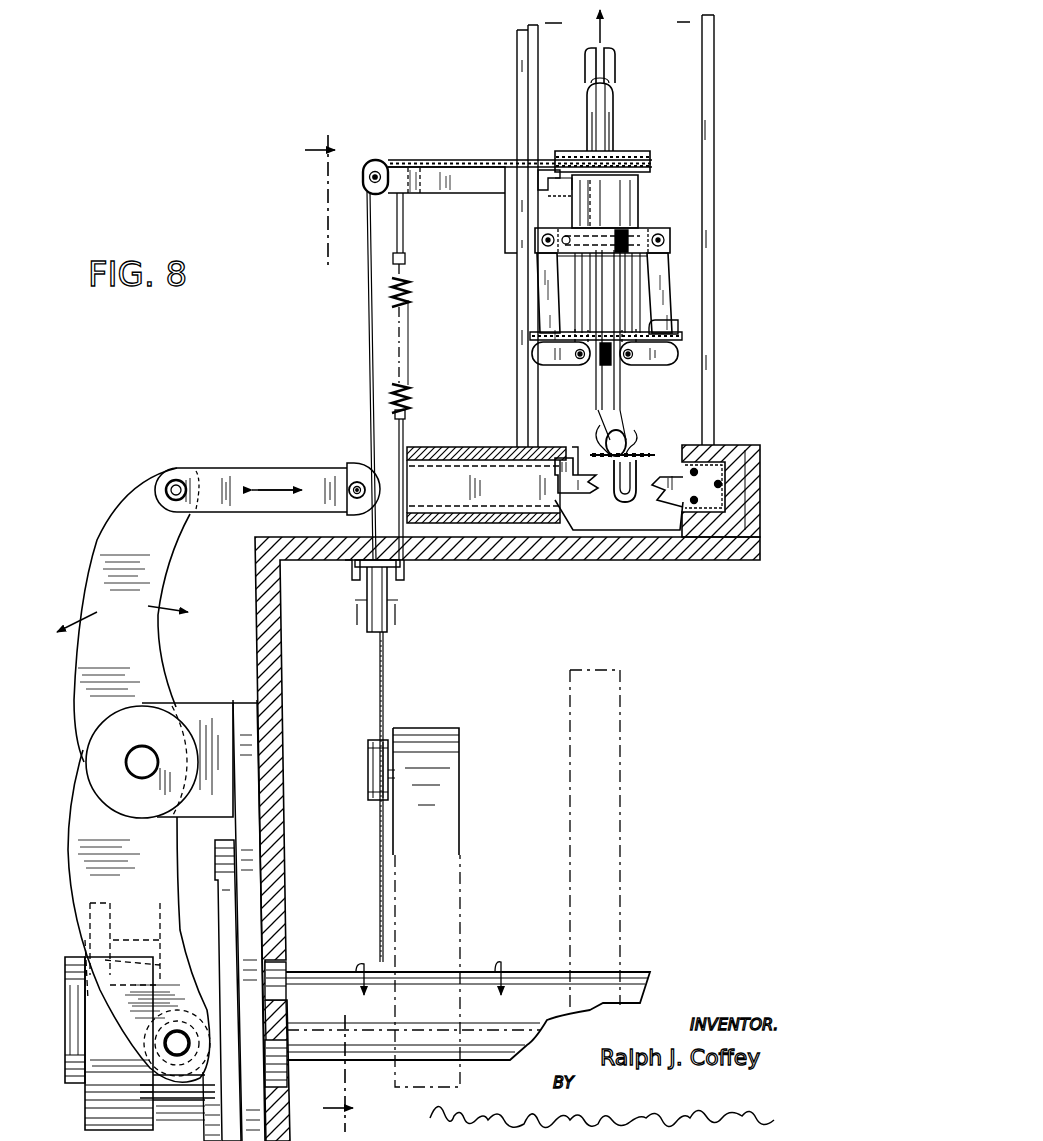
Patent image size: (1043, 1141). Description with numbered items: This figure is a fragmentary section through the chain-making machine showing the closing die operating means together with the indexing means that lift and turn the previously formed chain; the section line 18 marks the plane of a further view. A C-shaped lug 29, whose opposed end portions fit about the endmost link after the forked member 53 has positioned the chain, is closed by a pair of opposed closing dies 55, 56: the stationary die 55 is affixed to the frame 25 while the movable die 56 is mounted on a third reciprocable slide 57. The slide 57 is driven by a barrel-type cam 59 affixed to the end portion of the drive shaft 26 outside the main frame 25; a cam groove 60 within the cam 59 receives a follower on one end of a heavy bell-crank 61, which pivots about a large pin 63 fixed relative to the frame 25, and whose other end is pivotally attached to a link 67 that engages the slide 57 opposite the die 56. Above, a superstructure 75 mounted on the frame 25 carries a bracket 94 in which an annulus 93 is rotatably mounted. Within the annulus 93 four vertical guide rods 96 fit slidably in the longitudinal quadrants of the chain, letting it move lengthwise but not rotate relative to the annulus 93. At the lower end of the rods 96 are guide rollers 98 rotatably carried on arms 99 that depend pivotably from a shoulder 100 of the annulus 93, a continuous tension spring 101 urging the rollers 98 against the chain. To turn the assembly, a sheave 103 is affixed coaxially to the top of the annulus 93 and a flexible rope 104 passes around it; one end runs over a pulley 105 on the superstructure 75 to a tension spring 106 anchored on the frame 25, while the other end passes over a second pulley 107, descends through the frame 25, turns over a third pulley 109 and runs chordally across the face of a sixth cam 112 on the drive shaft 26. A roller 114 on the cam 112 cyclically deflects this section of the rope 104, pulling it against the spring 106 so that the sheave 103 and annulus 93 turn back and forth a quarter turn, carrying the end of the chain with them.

The section line 18- 18 is at (319, 627).
The frame 25 is at (276, 656).
The drive shaft 26 is at (72, 978).
The C-shaped lug 29 is at (617, 434).
The forked member 53 is at (638, 454).
The closing die 55 is at (672, 502).
The closing die 56 is at (580, 466).
The third reciprocable slide 57 is at (478, 462).
The barrel-type cam 59 is at (102, 1092).
The cam groove 60 is at (151, 1104).
The bell-crank 61 is at (98, 579).
The pin 63 is at (142, 758).
The link 67 is at (238, 478).
The superstructure 75 is at (712, 195).
The annulus 93 is at (625, 206).
The bracket 94 is at (536, 187).
The guide rods 96 is at (590, 134).
The guide rollers 98 is at (578, 365).
The arms 99 is at (544, 316).
The shoulder 100 is at (640, 252).
The tension spring 101 is at (656, 339).
The sheave 103 is at (638, 152).
The rope 104 is at (503, 141).
The pulley 105 is at (400, 155).
The tension spring 106 is at (407, 299).
The second pulley 107 is at (360, 164).
The third pulley 109 is at (388, 618).
The sixth cam 112 is at (454, 806).
The roller 114 is at (376, 770).